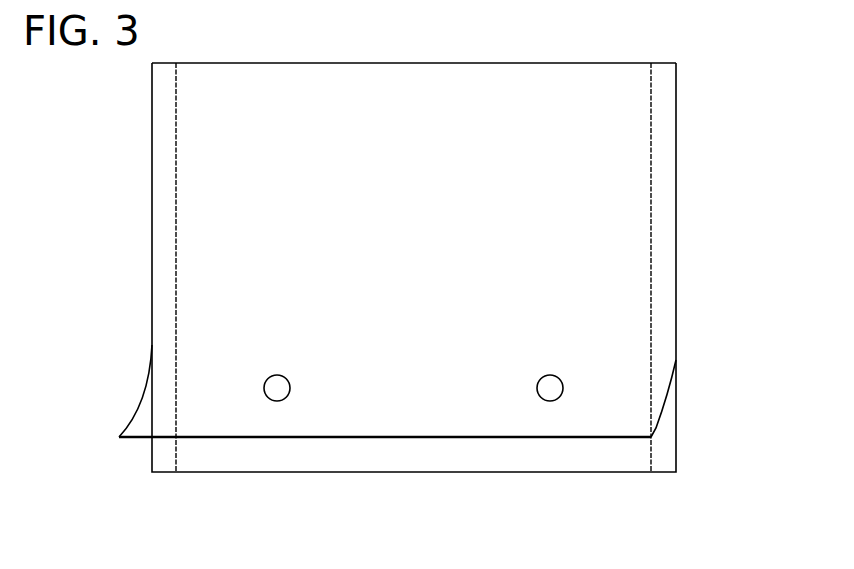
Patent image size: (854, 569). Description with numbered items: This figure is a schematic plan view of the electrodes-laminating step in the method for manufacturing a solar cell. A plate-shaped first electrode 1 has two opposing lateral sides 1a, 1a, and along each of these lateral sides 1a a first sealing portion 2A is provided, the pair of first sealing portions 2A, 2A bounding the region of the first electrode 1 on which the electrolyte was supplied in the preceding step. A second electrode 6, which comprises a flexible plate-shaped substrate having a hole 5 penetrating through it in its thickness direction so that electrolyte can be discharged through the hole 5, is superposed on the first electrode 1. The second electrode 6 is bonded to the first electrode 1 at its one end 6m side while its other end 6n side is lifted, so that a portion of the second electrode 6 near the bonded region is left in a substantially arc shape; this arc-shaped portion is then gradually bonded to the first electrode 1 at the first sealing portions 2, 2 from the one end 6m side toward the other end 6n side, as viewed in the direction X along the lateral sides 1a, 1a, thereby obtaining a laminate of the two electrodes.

The first electrode 1 is at (578, 473).
The lateral side 1a is at (152, 318).
The first sealing portion 2A is at (415, 267).
The first sealing portion 2 is at (165, 170).
The hole 5 is at (290, 391).
The second electrode 6 is at (397, 272).
The one end 6m is at (484, 62).
The other end 6n is at (520, 438).
The direction X is at (723, 262).